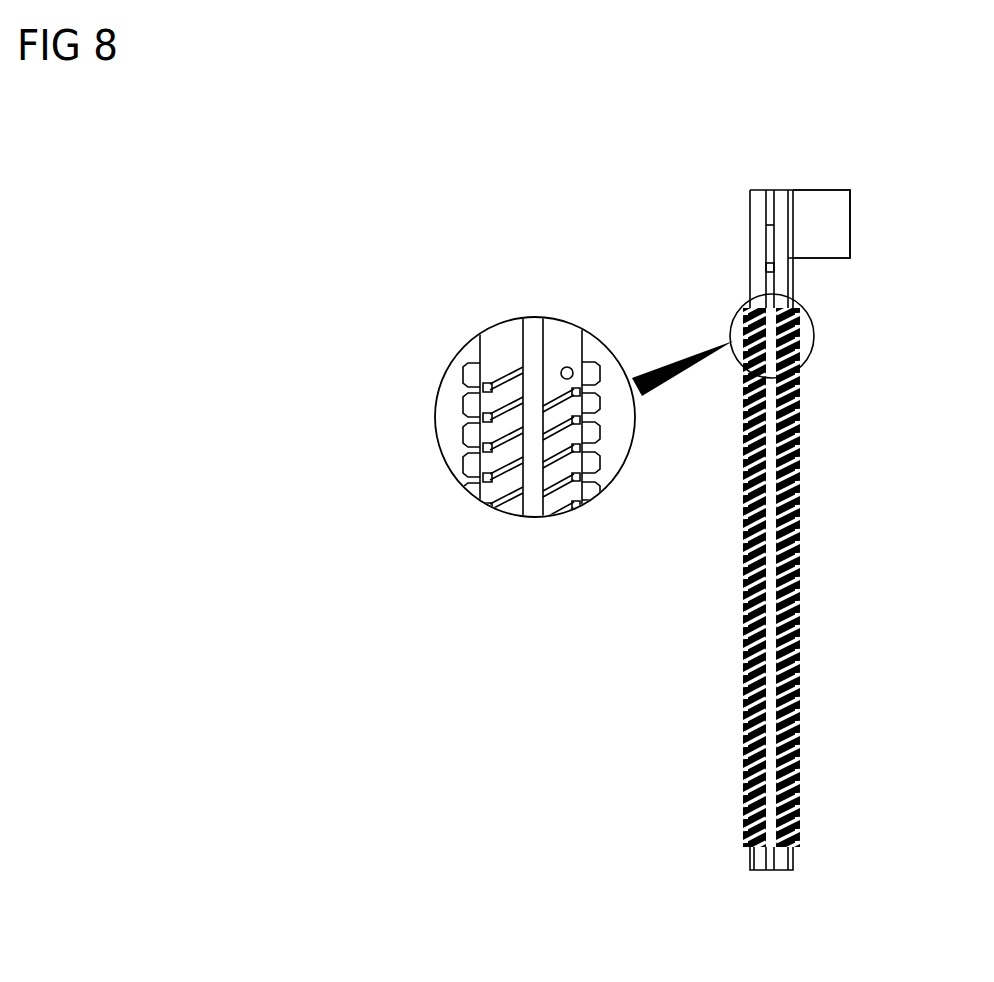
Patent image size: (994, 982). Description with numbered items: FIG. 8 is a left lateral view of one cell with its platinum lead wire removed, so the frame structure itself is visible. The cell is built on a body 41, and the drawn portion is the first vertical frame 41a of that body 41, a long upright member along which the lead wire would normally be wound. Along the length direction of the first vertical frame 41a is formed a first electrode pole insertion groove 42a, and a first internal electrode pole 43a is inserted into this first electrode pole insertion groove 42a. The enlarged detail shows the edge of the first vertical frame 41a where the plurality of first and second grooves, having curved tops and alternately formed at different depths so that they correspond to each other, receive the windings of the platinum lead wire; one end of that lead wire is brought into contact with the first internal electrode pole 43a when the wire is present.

The body 41 is at (778, 870).
The first vertical frame 41a is at (788, 283).
The first electrode pole insertion groove 42a is at (767, 268).
The first internal electrode pole 43a is at (770, 224).